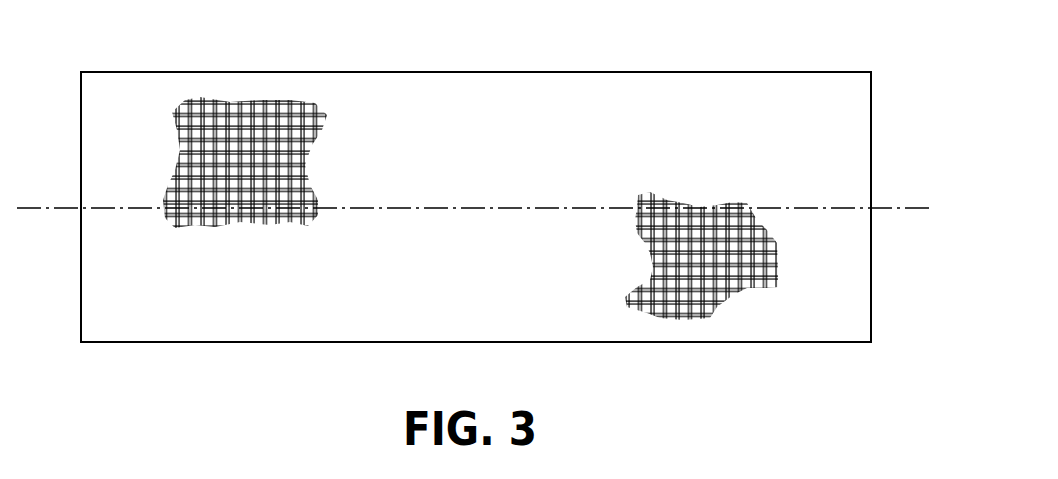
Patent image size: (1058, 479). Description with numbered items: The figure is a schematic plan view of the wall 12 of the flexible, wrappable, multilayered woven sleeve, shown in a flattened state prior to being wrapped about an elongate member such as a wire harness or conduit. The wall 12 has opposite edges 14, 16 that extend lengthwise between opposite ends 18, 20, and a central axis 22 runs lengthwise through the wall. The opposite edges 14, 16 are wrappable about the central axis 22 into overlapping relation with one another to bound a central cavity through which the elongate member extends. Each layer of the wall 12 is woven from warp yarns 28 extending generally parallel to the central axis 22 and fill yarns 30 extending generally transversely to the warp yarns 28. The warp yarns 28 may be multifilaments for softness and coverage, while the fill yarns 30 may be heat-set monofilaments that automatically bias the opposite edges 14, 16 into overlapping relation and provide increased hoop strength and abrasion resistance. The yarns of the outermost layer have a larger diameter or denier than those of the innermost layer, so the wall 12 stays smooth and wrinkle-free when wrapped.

The wall 12 is at (571, 128).
The opposite edge 14 is at (458, 72).
The opposite edge 16 is at (420, 342).
The end 18 is at (81, 163).
The end 20 is at (871, 155).
The central axis 22 is at (450, 208).
The warp yarns 28 is at (208, 227).
The fill yarns 30 is at (205, 115).